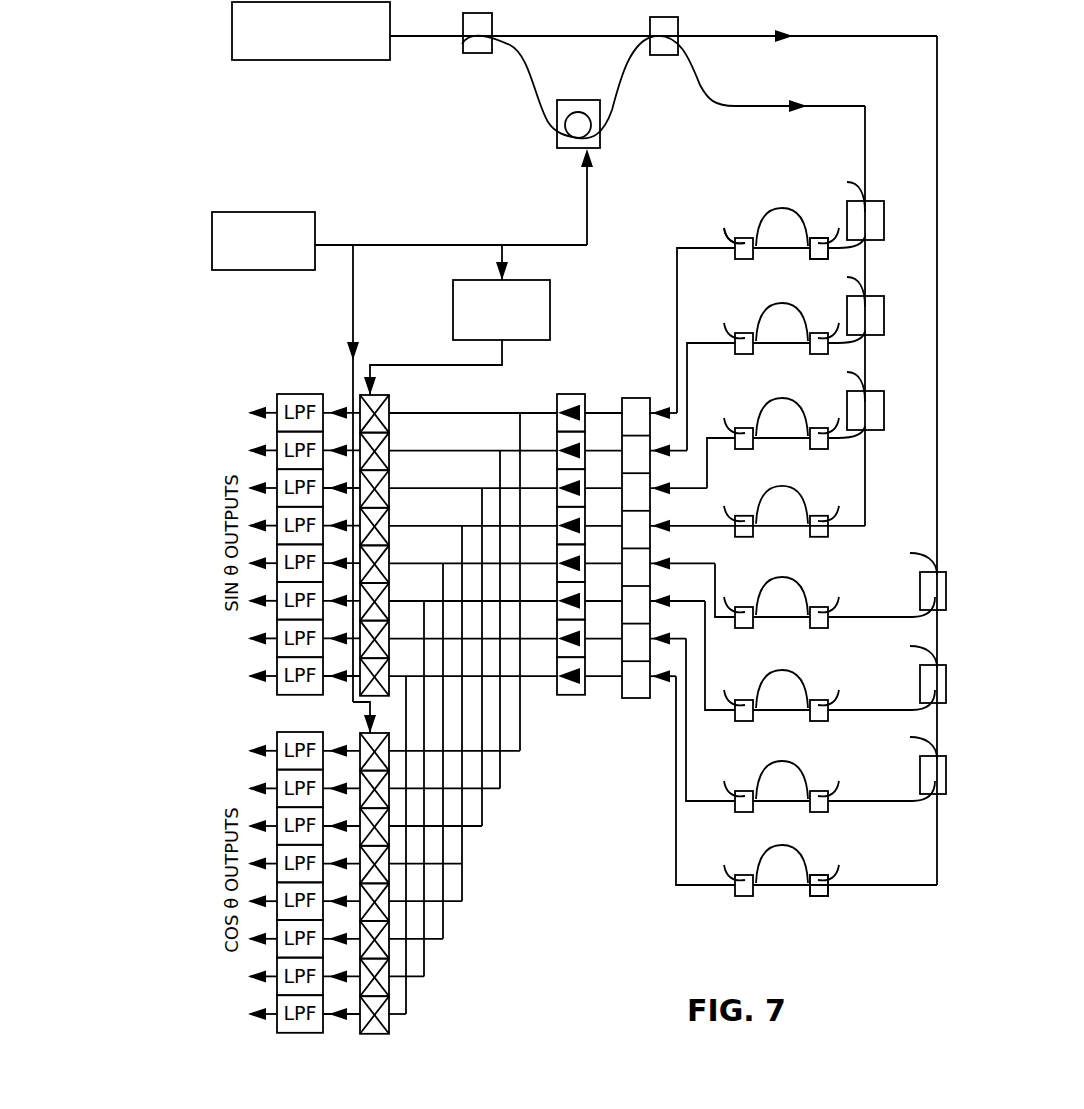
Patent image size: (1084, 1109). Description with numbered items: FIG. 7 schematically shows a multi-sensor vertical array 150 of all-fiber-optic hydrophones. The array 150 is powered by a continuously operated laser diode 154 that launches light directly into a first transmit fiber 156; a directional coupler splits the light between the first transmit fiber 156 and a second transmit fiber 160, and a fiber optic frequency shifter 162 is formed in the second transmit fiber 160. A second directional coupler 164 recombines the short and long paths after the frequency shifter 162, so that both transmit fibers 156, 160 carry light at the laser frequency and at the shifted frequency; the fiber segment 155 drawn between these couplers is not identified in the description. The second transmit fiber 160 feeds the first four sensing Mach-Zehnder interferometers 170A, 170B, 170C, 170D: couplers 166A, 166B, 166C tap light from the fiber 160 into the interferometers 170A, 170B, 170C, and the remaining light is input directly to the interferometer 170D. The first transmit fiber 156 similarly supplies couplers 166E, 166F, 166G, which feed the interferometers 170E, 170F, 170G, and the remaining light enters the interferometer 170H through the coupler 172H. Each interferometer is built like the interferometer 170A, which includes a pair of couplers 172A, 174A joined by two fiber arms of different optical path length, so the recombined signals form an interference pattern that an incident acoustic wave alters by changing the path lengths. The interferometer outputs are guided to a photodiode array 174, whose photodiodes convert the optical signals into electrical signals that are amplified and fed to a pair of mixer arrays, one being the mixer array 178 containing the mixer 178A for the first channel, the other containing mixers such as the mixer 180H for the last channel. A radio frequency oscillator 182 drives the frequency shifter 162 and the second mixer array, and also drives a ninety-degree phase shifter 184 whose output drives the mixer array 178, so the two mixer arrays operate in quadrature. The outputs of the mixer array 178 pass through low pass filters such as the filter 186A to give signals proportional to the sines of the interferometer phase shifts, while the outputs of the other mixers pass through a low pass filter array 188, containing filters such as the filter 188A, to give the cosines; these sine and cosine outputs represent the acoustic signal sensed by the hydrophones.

The multi-sensor vertical array 150 is at (574, 872).
The laser diode 154 is at (266, 60).
The optical fiber 155 is at (548, 42).
The first transmit fiber 156 is at (474, 53).
The second transmit fiber 160 is at (770, 107).
The fiber optic frequency shifter 162 is at (558, 140).
The second fiber optic directional coupler 164 is at (657, 55).
The optical coupler 166A is at (877, 246).
The optical coupler 166B is at (877, 341).
The optical coupler 166C is at (872, 432).
The coupler 166E is at (920, 580).
The coupler 166F is at (920, 673).
The coupler 166G is at (920, 765).
The sensing Mach-Zehnder interferometer 170A is at (746, 212).
The sensing Mach-Zehnder interferometer 170B is at (742, 310).
The sensing Mach-Zehnder interferometer 170C is at (752, 394).
The sensing Mach-Zehnder interferometer 170D is at (752, 487).
The sensing Mach-Zehnder interferometer 170E is at (818, 574).
The sensing Mach-Zehnder interferometer 170F is at (818, 666).
The sensing Mach-Zehnder interferometer 170G is at (815, 766).
The sensing Mach-Zehnder interferometer 170H is at (787, 898).
The coupler 172A is at (815, 232).
The coupler 172H is at (810, 896).
The photodiode array 174 is at (638, 725).
The coupler 174A is at (742, 230).
The mixer array 178 is at (432, 535).
The mixer 178A is at (392, 425).
The mixer 180H is at (375, 1033).
The radio frequency oscillator 182 is at (240, 270).
The 90° phase shifter 184 is at (453, 318).
The low pass filter 186A is at (305, 393).
The low pass filter array 188 is at (295, 885).
The low pass filter 188A is at (303, 732).